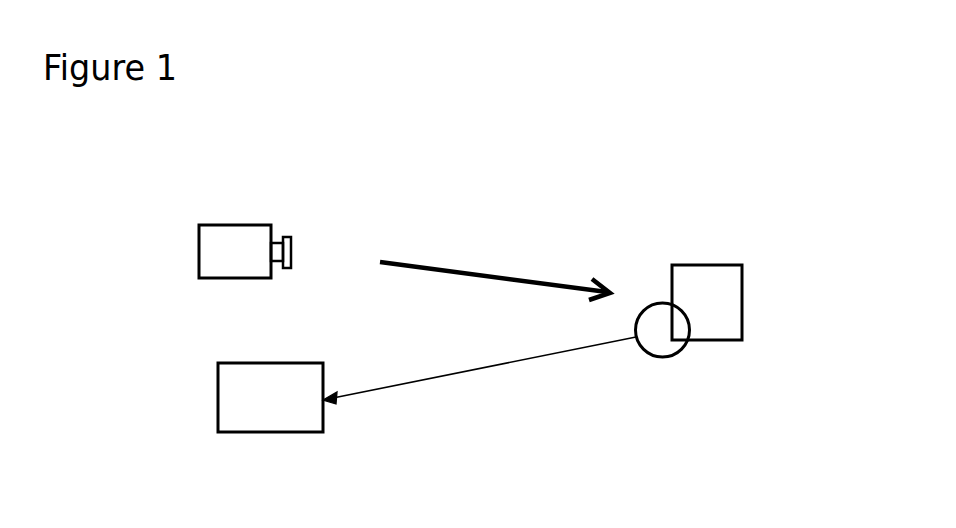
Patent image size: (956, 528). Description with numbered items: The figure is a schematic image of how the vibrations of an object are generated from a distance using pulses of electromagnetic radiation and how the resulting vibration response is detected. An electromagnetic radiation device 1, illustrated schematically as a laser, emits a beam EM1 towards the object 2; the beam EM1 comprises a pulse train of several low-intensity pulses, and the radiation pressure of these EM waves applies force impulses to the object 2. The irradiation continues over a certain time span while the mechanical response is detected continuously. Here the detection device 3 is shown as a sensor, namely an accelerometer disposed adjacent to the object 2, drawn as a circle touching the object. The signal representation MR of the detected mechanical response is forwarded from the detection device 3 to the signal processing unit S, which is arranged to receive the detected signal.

The device for emitting EM waves 1 is at (200, 238).
The signal processing unit S is at (218, 395).
The beam EM1 is at (492, 273).
The signal representation of the mechanical response MR is at (492, 363).
The object 2 is at (742, 288).
The detection device 3 is at (653, 357).